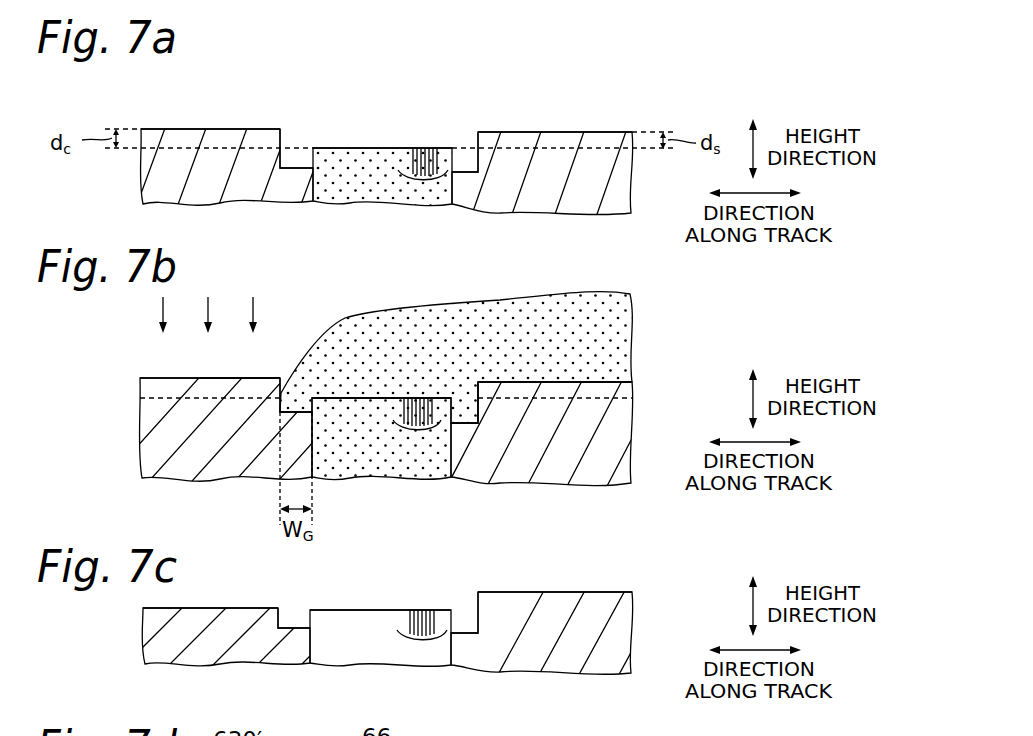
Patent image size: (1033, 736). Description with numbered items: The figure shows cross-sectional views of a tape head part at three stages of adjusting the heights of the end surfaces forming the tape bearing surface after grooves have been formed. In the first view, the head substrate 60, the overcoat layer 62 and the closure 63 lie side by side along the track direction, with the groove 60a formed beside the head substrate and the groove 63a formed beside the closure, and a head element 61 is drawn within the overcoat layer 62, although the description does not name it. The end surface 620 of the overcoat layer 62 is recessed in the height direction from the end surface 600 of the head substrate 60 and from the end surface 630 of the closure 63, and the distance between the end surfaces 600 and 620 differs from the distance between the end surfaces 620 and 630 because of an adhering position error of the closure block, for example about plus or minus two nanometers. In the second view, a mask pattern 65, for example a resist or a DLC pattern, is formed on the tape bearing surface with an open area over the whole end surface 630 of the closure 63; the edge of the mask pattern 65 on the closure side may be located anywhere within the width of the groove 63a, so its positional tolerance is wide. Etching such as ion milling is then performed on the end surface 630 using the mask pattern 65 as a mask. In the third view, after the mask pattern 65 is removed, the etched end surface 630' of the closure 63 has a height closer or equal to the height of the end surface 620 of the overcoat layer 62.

In FIG. 7A, the head substrate 60 is at (548, 180).
In FIG. 7B, the head substrate 60 is at (547, 467).
In FIG. 7C, the head substrate 60 is at (557, 643).
In FIG. 7A, the groove 60a is at (462, 157).
In FIG. 7B, the groove 60a is at (463, 413).
In FIG. 7C, the groove 60a is at (457, 620).
In FIG. 7A, the end surface of head substrate 600 is at (552, 132).
In FIG. 7B, the end surface of head substrate 600 is at (577, 382).
In FIG. 7C, the end surface of head substrate 600 is at (572, 592).
In FIG. 7A, the thin-film magnetic head element 61 is at (423, 190).
In FIG. 7B, the thin-film magnetic head element 61 is at (422, 442).
In FIG. 7C, the thin-film magnetic head element 61 is at (421, 655).
In FIG. 7A, the overcoat layer 62 is at (378, 182).
In FIG. 7B, the overcoat layer 62 is at (378, 468).
In FIG. 7C, the overcoat layer 62 is at (340, 640).
In FIG. 7A, the end surface of overcoat layer 620 is at (382, 148).
In FIG. 7B, the end surface of overcoat layer 620 is at (358, 398).
In FIG. 7C, the end surface of overcoat layer 620 is at (377, 610).
In FIG. 7A, the closure 63 is at (212, 180).
In FIG. 7B, the closure 63 is at (182, 472).
In FIG. 7C, the closure 63 is at (195, 640).
In FIG. 7A, the groove 63a is at (296, 155).
In FIG. 7B, the groove 63a is at (293, 417).
In FIG. 7C, the groove 63a is at (292, 618).
In FIG. 7A, the end surface of closure 630 is at (210, 90).
In FIG. 7B, the end surface of closure 630 is at (248, 357).
In FIG. 7B, the end surface of closure after etching 630' is at (209, 362).
In FIG. 7C, the end surface of closure after etching 630' is at (210, 581).
In FIG. 7B, the mask pattern 65 is at (588, 320).